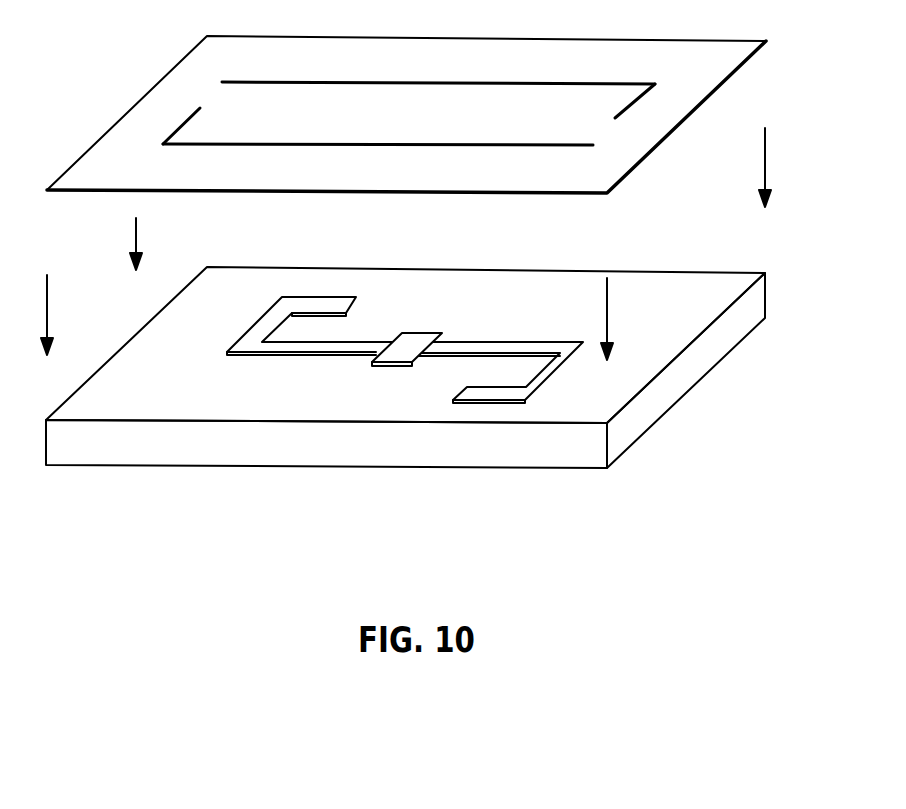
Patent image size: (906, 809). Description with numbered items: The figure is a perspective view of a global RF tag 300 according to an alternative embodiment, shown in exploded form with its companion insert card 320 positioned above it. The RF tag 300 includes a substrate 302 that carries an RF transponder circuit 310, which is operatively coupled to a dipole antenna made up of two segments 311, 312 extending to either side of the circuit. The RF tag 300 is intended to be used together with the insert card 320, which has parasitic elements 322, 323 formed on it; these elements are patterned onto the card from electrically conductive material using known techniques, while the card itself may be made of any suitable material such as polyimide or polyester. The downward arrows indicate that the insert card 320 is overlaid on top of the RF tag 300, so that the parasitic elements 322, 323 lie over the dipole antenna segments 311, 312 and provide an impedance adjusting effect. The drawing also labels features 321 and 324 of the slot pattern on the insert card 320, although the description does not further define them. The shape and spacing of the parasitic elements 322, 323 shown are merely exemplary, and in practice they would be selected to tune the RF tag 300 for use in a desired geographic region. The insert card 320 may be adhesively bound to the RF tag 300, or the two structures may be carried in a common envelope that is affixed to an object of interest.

The RF tag 300 is at (405, 409).
The substrate 302 is at (595, 400).
The RF transponder circuit 310 is at (415, 340).
The dipole antenna segment 311 is at (317, 345).
The dipole antenna segment 312 is at (498, 347).
The insert card 320 is at (433, 132).
The first slot portion 321 is at (370, 145).
The parasitic element 322 is at (520, 83).
The parasitic element 323 is at (177, 125).
The second slot end tab 324 is at (632, 107).